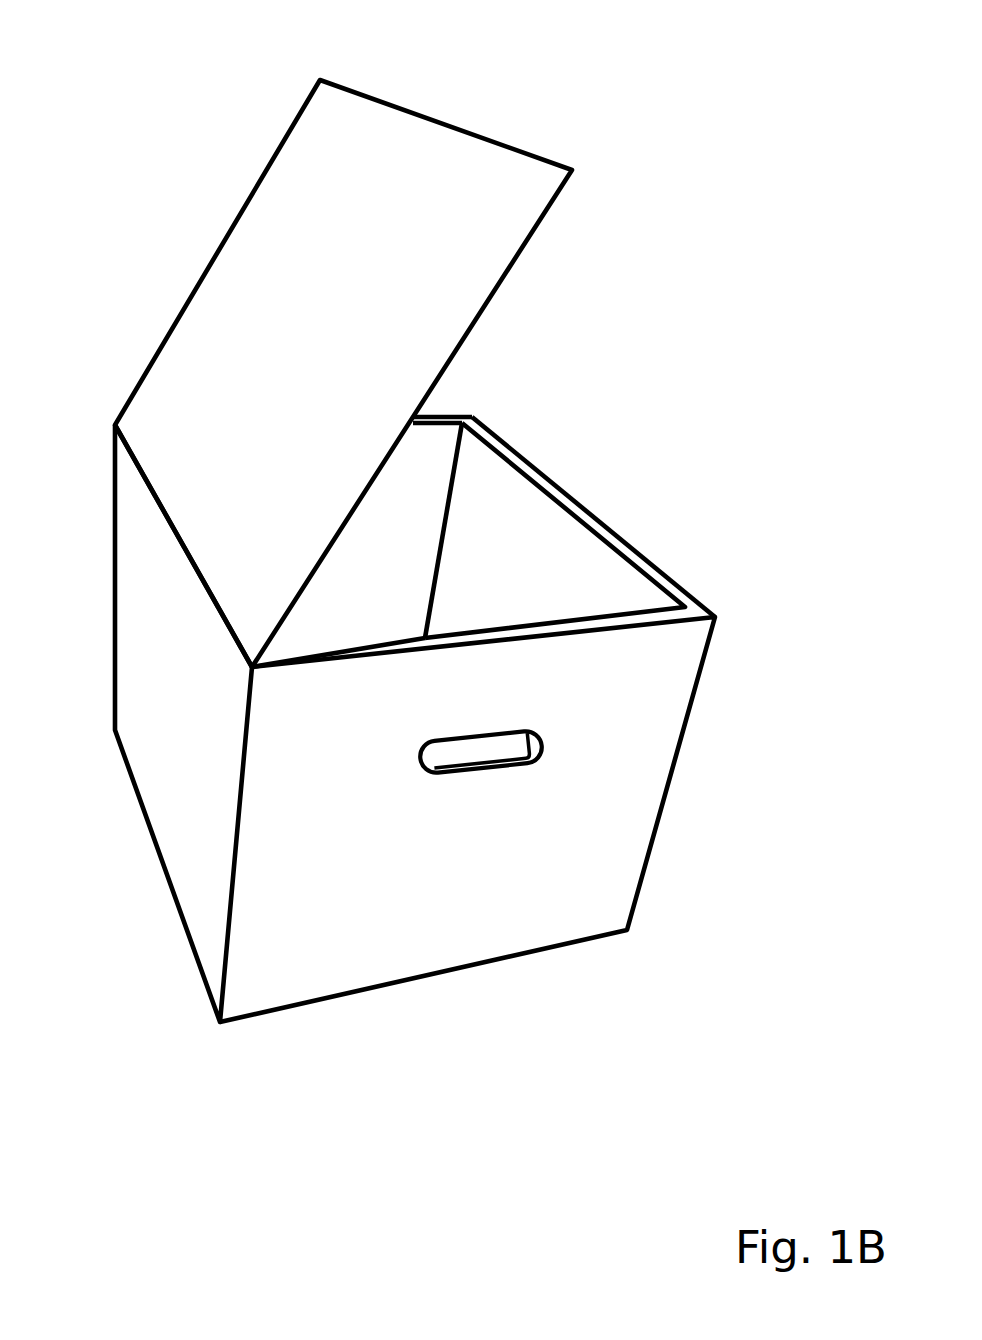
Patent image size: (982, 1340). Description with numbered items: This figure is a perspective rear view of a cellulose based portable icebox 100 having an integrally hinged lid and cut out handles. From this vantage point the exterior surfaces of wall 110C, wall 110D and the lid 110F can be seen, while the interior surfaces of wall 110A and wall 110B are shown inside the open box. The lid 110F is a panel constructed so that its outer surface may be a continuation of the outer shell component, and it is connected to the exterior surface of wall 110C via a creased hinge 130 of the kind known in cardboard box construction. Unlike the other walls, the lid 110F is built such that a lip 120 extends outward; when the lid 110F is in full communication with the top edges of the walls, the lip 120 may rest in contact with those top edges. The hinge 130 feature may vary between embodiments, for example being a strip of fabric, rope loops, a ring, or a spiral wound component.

The cellulose based portable icebox 100 is at (712, 28).
The wall 110A is at (490, 566).
The wall 110B is at (360, 566).
The wall 110C is at (163, 720).
The wall 110D is at (453, 874).
The lid 110F is at (273, 366).
The lip 120 is at (343, 373).
The hinge 130 is at (133, 468).